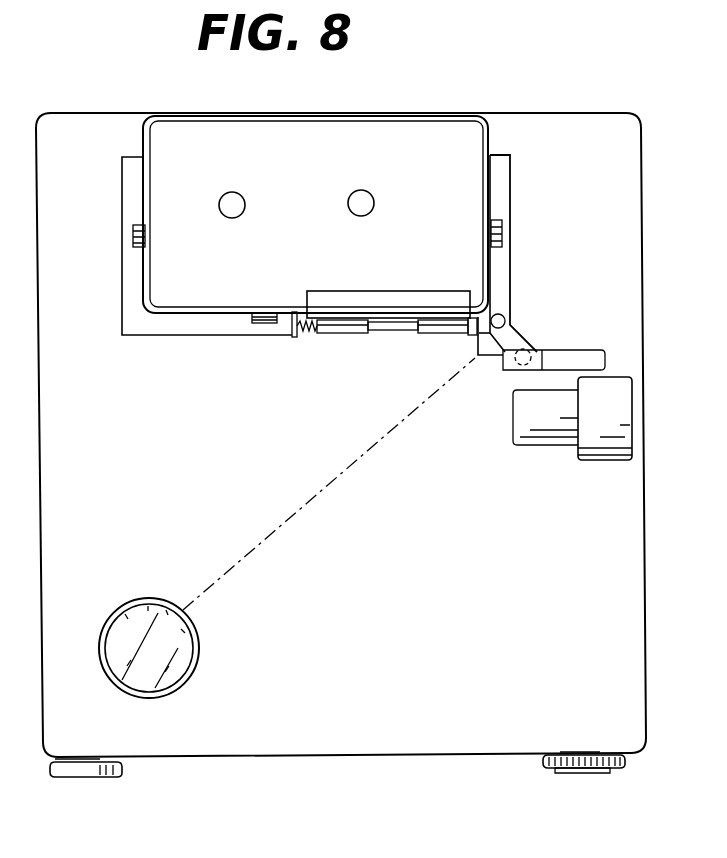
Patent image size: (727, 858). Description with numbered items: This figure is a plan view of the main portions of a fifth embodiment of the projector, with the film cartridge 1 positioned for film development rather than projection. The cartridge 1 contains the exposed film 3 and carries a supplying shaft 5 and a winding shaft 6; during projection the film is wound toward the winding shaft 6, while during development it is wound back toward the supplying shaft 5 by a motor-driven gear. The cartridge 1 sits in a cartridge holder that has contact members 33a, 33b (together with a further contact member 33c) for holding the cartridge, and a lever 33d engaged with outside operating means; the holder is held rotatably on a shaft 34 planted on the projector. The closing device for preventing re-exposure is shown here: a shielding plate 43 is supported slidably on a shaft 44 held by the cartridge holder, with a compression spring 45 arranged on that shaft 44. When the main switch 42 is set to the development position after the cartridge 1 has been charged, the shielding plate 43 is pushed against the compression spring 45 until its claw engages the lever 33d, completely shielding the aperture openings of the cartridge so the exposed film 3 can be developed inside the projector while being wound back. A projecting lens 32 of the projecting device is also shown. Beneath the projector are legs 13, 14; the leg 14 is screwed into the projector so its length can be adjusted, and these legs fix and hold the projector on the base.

The film cartridge 1 is at (413, 130).
The exposed film 3 is at (502, 173).
The supplying shaft 5 is at (363, 190).
The winding shaft 6 is at (231, 192).
The leg 13 is at (90, 770).
The leg 14 is at (597, 772).
The projecting lens 32 is at (603, 445).
The contact member 33a is at (503, 232).
The contact member 33b is at (256, 324).
The screw 33c is at (132, 238).
The lever 33d is at (570, 350).
The shaft 34 is at (501, 314).
The main switch 42 is at (118, 657).
The shielding plate 43 is at (322, 292).
The shaft 44 is at (393, 332).
The compression spring 45 is at (294, 338).